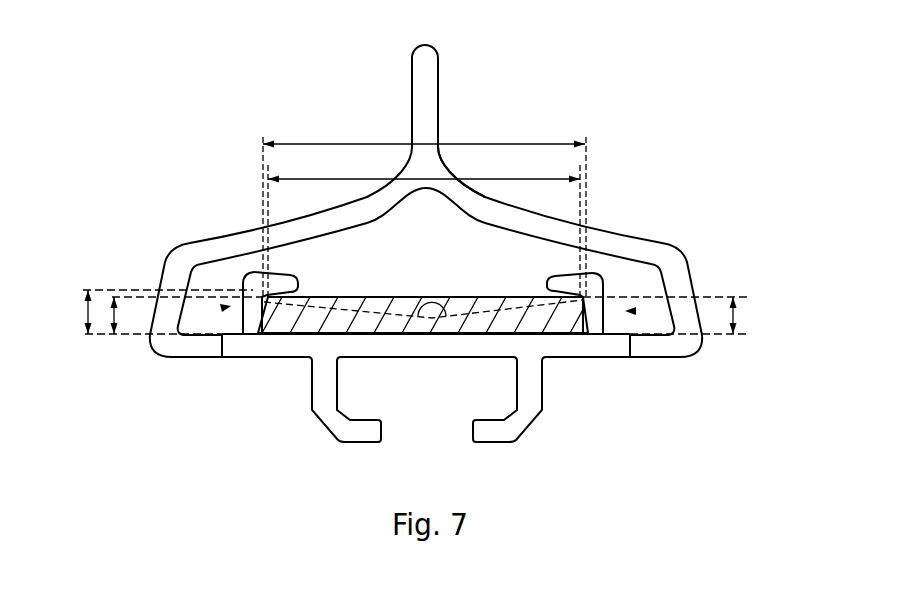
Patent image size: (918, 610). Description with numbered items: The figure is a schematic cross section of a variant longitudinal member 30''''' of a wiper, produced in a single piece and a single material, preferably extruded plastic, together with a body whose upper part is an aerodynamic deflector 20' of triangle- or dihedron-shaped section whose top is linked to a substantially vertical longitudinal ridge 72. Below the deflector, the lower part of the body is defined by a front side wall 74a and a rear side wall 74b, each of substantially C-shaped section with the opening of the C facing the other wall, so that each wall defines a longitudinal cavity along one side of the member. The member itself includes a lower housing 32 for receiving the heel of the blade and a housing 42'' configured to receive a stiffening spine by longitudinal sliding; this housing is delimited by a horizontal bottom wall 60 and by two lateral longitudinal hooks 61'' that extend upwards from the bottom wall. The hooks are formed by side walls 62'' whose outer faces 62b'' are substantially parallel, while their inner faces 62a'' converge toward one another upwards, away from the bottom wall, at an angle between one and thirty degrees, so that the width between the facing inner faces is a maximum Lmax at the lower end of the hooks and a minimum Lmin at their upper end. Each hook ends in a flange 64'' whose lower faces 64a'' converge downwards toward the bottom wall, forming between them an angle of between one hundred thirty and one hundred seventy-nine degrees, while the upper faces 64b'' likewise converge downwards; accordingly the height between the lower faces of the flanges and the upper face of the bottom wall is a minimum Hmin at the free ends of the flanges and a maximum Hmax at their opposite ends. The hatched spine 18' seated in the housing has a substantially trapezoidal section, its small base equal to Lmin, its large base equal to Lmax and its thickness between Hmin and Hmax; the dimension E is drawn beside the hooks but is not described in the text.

The longitudinal member 30''''' is at (471, 200).
The longitudinal ridge 72 is at (438, 65).
The front side wall 74a is at (163, 273).
The rear side wall 74b is at (692, 281).
The aerodynamic deflector 20' is at (469, 148).
The lower housing 32 is at (426, 388).
The bottom wall 60 is at (482, 352).
The side wall 62'' is at (429, 312).
The inner face 62a'' is at (428, 353).
The outer face 62b'' is at (429, 367).
The flange 64'' is at (408, 312).
The lower face of flange 64a'' is at (425, 375).
The upper face of flange 64b'' is at (408, 220).
The housing 42'' is at (424, 281).
The stiffening longitudinal spine 18' is at (423, 288).
The lateral longitudinal hook 61'' is at (431, 377).
The maximum width Lmax is at (330, 144).
The minimum width Lmin is at (537, 177).
The maximum height Hmax is at (88, 290).
The minimum height Hmin is at (114, 338).
The offset E is at (737, 318).